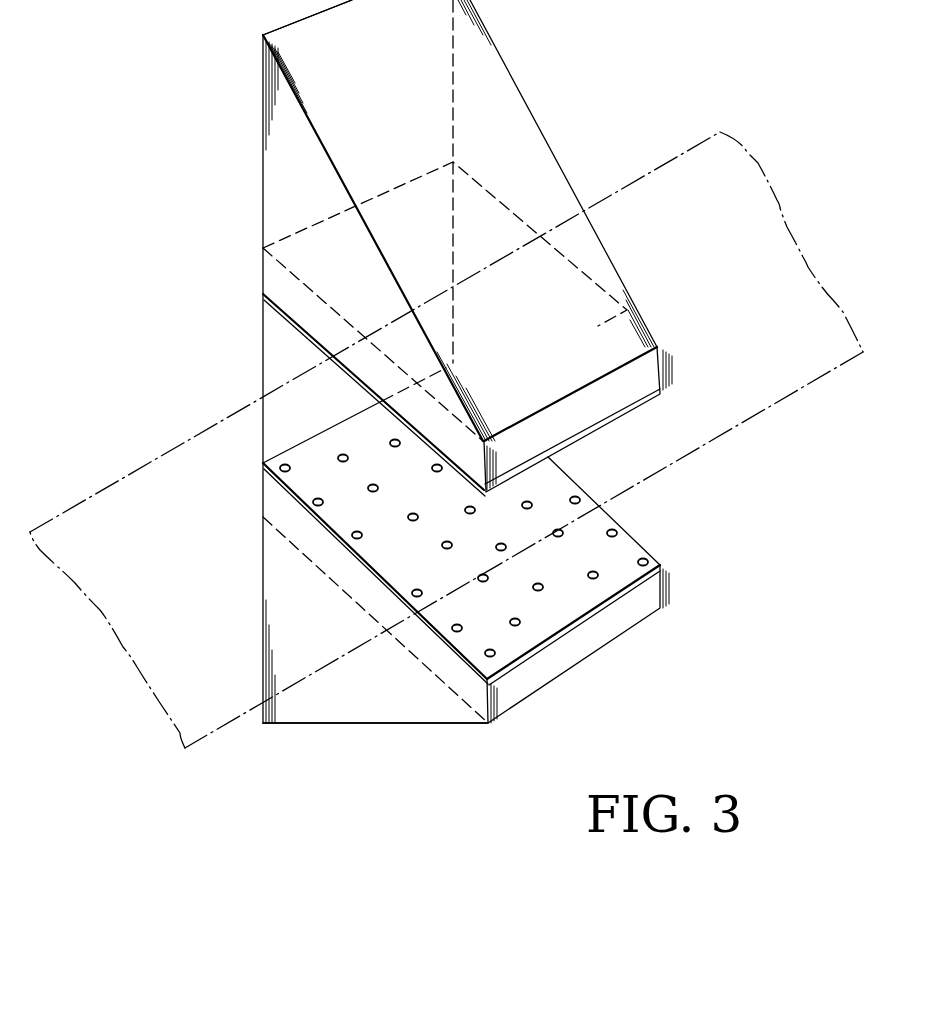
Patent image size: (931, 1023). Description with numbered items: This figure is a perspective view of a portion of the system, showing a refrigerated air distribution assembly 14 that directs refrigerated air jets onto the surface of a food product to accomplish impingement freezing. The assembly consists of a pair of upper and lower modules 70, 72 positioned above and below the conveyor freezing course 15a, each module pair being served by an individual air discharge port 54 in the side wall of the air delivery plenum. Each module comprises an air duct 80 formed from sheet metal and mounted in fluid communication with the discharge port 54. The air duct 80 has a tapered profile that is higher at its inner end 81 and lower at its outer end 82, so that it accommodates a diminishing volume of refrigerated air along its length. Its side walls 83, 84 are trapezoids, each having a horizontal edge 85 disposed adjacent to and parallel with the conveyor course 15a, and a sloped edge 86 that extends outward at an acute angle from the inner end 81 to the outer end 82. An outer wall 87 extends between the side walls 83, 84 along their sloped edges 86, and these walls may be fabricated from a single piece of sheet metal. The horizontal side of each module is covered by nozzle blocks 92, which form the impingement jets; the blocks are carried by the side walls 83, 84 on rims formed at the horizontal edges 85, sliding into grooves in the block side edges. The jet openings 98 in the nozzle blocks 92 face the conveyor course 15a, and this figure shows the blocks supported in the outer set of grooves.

The bracket assembly 14 is at (165, 245).
The conveyor freezing course 15a is at (748, 423).
The air discharge port 54 is at (385, 190).
The upper module 70 is at (588, 150).
The lower module 72 is at (424, 795).
The air duct 80 is at (498, 47).
The inner end 81 is at (262, 93).
The outer end 82 is at (660, 375).
The side wall 83 is at (307, 194).
The side wall 84 is at (526, 130).
The horizontal edge 85 is at (288, 314).
The sloped edge 86 is at (362, 222).
The outer wall 87 is at (395, 59).
The nozzle block 92 is at (638, 295).
The holes 98 is at (363, 537).